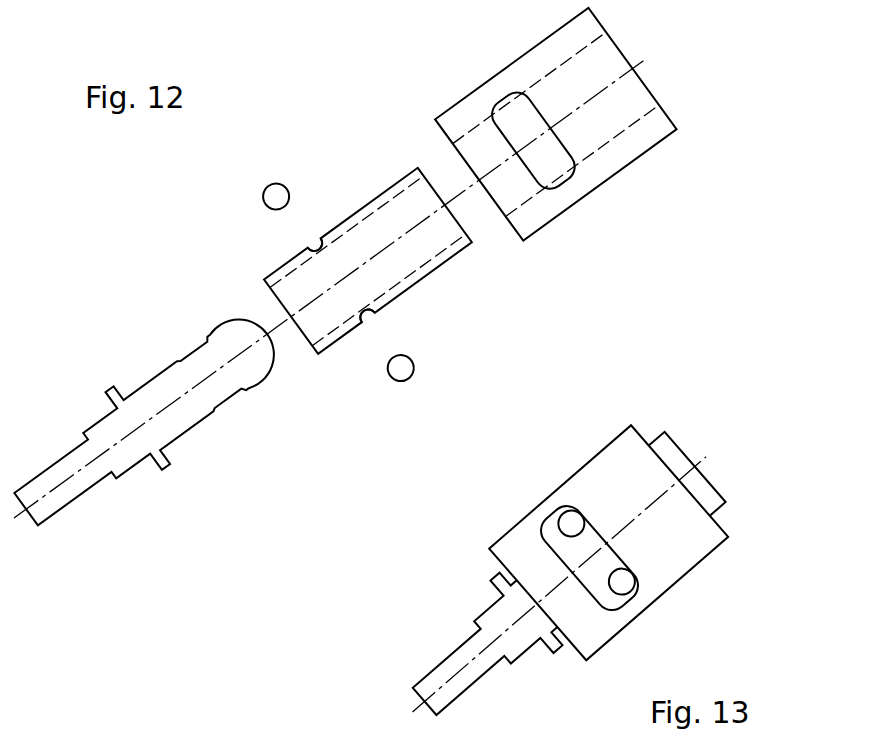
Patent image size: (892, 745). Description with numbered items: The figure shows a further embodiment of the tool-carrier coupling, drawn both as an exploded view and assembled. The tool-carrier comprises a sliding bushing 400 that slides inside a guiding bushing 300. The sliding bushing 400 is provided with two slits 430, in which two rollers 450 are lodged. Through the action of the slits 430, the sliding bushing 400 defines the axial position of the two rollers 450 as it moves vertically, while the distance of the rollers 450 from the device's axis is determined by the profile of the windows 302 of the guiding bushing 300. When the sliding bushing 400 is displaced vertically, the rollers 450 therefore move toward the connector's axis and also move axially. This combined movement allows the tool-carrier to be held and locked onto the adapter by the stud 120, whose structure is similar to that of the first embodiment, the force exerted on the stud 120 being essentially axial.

In FIG. 12, the stud 120 is at (162, 387).
In FIG. 13, the stud 120 is at (497, 621).
In FIG. 12, the guiding bushing 300 is at (637, 133).
In FIG. 13, the guiding bushing 300 is at (628, 465).
In FIG. 12, the windows 302 is at (553, 163).
In FIG. 12, the sliding bushing 400 is at (395, 218).
In FIG. 12, the slits 430 is at (340, 283).
In FIG. 12, the rollers 450 is at (275, 198).
In FIG. 13, the rollers 450 is at (570, 524).